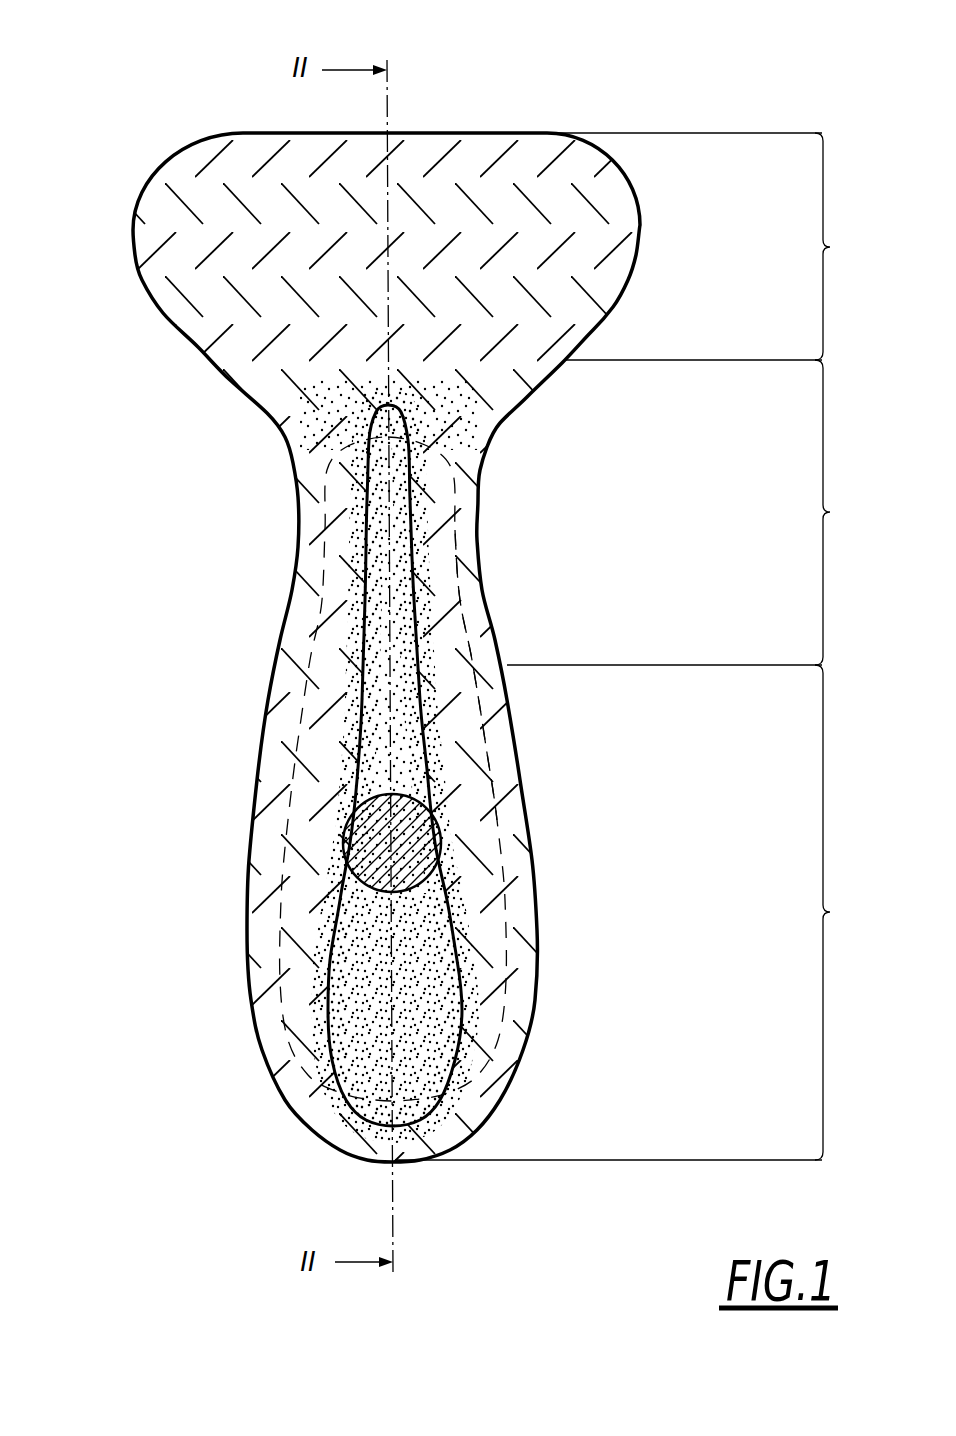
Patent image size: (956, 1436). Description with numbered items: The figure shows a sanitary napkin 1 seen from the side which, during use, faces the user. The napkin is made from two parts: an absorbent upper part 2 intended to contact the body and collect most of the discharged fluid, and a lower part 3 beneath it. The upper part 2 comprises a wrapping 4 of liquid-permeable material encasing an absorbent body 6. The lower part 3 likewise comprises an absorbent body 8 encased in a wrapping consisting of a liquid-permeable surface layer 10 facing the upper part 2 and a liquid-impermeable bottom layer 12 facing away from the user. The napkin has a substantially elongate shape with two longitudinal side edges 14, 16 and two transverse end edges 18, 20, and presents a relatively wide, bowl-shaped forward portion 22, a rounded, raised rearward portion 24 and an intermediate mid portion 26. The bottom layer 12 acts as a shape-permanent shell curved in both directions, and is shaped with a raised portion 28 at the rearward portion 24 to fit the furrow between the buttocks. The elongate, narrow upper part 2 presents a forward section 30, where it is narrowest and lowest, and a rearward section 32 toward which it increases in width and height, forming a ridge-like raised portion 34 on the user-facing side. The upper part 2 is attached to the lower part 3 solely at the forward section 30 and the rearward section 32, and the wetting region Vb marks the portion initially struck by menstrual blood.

The sanitary napkin 1 is at (632, 63).
The upper part 2 is at (438, 843).
The lower part 3 is at (600, 284).
The wrapping 4 is at (422, 1023).
The absorbent body 6 is at (440, 768).
The absorbent body 8 is at (330, 772).
The liquid-permeable surface layer 10 is at (208, 302).
The liquid-impermeable bottom layer 12 is at (218, 367).
The longitudinal side edge 14 is at (272, 632).
The longitudinal side edge 16 is at (511, 636).
The transverse end edge 18 is at (435, 128).
The transverse end edge 20 is at (375, 1168).
The forward portion 22 is at (836, 252).
The rearward portion 24 is at (836, 919).
The mid portion 26 is at (836, 514).
The raised portion 28 is at (412, 1162).
The forward section 30 is at (372, 452).
The rearward section 32 is at (372, 1085).
The ridge-like raised portion 34 is at (350, 858).
The wetting region Vb is at (395, 840).